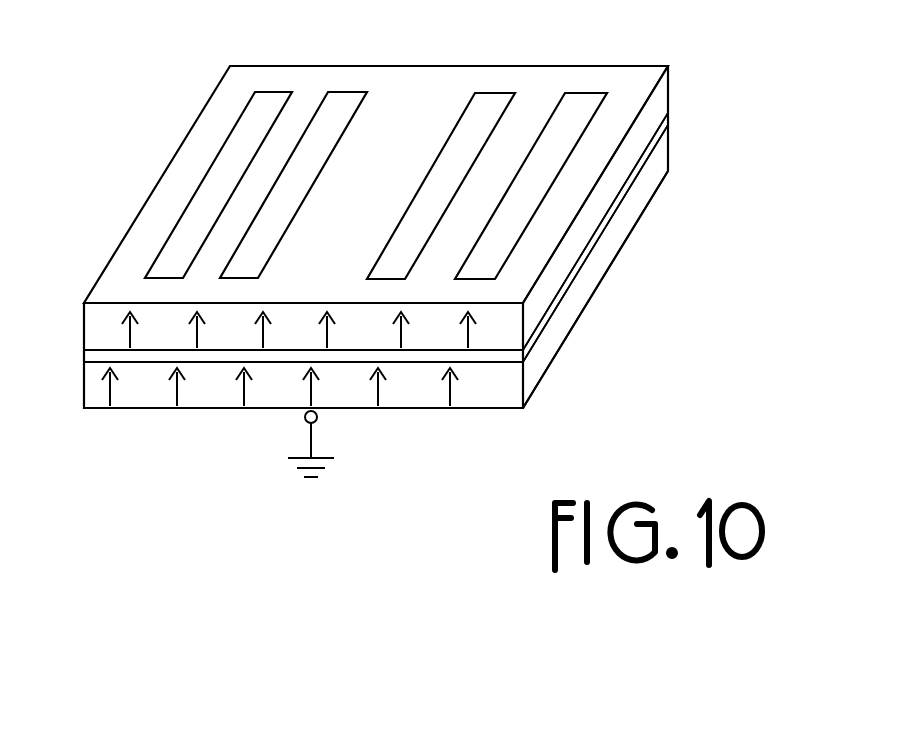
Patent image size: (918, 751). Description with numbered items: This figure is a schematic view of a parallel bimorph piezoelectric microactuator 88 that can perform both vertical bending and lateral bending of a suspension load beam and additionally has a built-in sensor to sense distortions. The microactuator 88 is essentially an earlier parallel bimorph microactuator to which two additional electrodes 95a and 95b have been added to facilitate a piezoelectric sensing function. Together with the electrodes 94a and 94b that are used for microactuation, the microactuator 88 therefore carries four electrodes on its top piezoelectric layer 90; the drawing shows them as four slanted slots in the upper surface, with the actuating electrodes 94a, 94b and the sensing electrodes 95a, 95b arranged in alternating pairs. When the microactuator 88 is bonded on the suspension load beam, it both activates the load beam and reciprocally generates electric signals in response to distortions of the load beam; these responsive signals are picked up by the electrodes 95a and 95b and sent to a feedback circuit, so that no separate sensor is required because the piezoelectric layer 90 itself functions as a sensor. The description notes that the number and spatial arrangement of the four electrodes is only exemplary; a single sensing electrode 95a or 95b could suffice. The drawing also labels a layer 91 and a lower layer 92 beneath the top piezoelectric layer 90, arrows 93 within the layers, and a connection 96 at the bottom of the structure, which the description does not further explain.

The parallel bimorph microactuator 88 is at (726, 89).
The top piezoelectric layer 90 is at (652, 110).
The intermediate layer 91 is at (643, 157).
The lower piezoelectric layer 92 is at (622, 225).
The polarization direction arrows 93 is at (127, 332).
The electrode 94a is at (257, 105).
The electrode 95a is at (332, 105).
The electrode 94b is at (470, 118).
The electrode 95b is at (565, 112).
The ground connection 96 is at (304, 412).